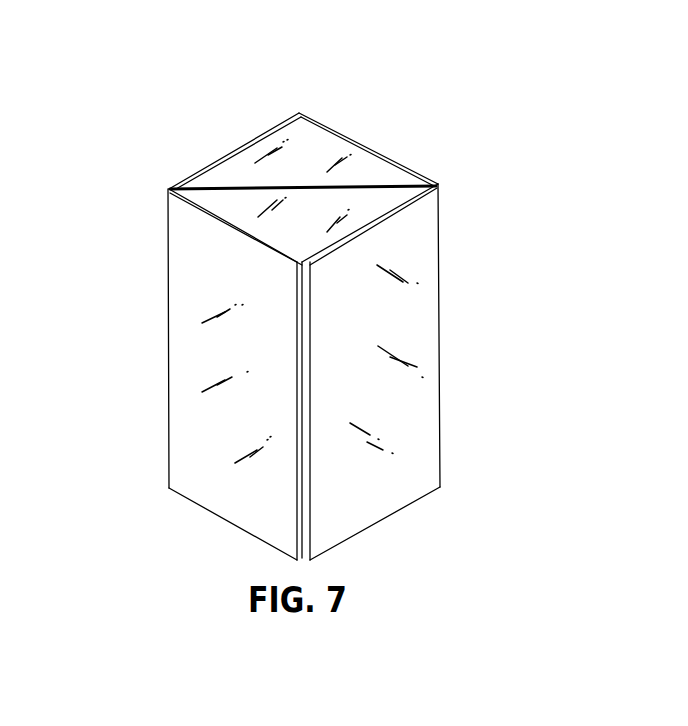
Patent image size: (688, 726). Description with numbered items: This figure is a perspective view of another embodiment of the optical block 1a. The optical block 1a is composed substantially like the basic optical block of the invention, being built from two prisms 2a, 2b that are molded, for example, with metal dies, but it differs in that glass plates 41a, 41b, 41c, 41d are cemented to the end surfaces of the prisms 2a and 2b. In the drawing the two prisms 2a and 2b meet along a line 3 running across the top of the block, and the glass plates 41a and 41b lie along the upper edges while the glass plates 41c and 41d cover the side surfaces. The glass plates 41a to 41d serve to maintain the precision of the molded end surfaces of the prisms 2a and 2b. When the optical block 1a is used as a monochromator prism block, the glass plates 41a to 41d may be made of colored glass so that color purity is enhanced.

The optical block 1a is at (565, 542).
The prism 2a is at (323, 148).
The prism 2b is at (237, 212).
The dividing line (ridge) 3 is at (202, 184).
The glass plate 41a is at (217, 157).
The glass plate 41b is at (390, 155).
The glass plate 41c is at (423, 317).
The glass plate 41d is at (190, 347).